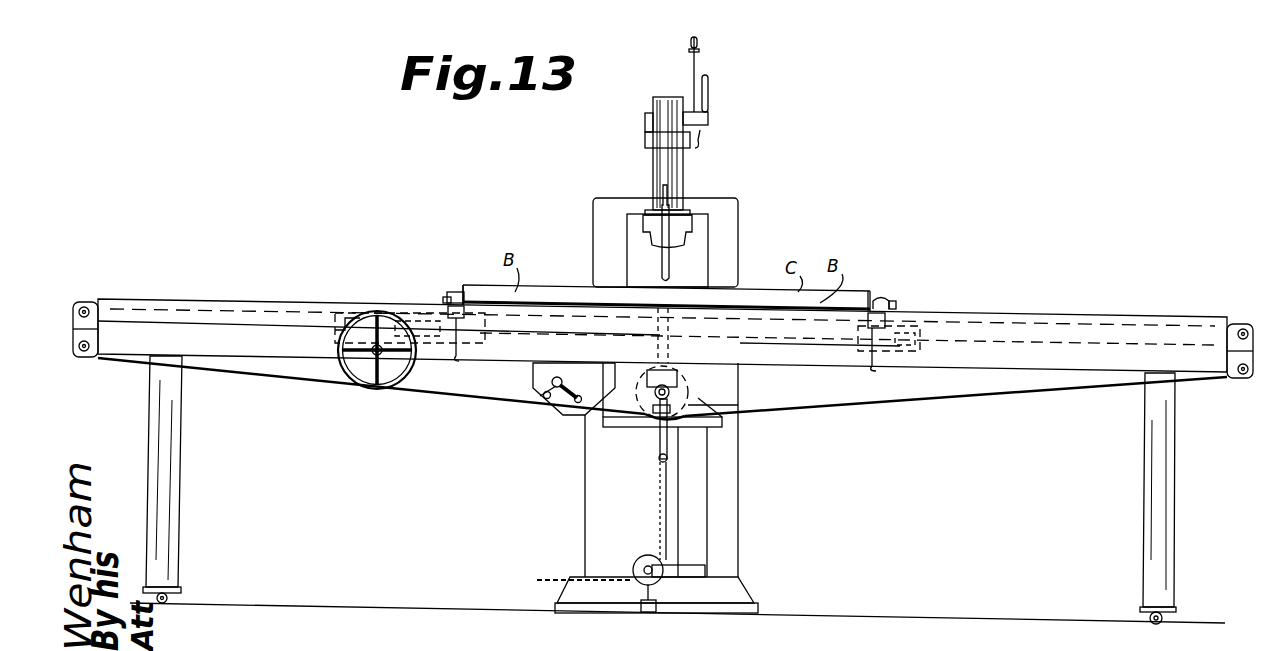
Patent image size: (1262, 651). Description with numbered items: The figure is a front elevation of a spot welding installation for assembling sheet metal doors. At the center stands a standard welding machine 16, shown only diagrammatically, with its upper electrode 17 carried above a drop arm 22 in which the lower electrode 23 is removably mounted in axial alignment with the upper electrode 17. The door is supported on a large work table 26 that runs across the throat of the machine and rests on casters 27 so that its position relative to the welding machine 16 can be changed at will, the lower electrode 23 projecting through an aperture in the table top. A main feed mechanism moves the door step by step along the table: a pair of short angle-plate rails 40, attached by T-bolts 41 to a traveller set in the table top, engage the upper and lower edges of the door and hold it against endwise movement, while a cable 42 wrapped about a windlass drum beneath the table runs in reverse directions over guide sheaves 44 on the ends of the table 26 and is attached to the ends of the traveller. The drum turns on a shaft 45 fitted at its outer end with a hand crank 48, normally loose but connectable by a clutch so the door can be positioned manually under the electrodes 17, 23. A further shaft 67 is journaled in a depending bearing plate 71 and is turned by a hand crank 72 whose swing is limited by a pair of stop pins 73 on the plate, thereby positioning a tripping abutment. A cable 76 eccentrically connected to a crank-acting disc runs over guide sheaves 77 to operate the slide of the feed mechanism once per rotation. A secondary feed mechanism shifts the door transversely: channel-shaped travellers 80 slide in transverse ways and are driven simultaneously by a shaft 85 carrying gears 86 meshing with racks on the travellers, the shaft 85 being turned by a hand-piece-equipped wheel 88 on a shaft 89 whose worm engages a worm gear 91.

The welding machine 16 is at (736, 198).
The upper electrode 17 is at (667, 258).
The drop arm 22 is at (612, 420).
The lower electrode 23 is at (680, 338).
The work table 26 is at (1010, 332).
The casters 27 is at (1150, 616).
The rails 40 is at (463, 291).
The T-bolts 41 is at (444, 293).
The cable 42 is at (100, 325).
The guide sheaves 44 is at (85, 302).
The shaft 45 is at (670, 389).
The hand crank 48 is at (667, 455).
The shaft 67 is at (540, 400).
The bearing plate 71 is at (552, 402).
The hand crank 72 is at (546, 392).
The stop pins 73 is at (578, 392).
The cable 76 is at (556, 580).
The guide sheaves 77 is at (636, 562).
The travellers 80 is at (465, 317).
The shaft 85 is at (770, 350).
The gears 86 is at (457, 359).
The hand-piece-equipped wheel 88 is at (365, 378).
The shaft 89 is at (388, 387).
The worm gear 91 is at (338, 362).